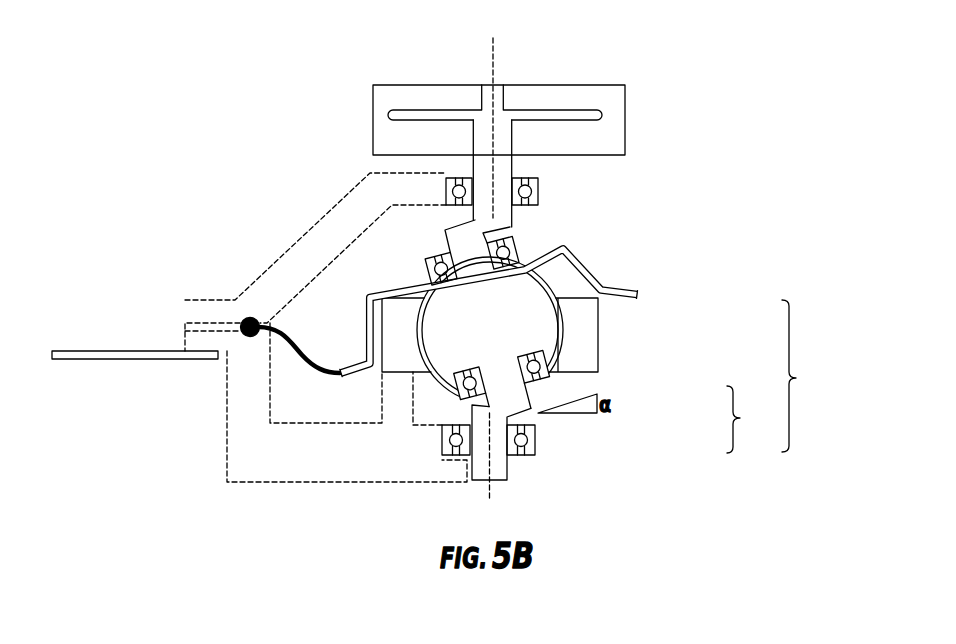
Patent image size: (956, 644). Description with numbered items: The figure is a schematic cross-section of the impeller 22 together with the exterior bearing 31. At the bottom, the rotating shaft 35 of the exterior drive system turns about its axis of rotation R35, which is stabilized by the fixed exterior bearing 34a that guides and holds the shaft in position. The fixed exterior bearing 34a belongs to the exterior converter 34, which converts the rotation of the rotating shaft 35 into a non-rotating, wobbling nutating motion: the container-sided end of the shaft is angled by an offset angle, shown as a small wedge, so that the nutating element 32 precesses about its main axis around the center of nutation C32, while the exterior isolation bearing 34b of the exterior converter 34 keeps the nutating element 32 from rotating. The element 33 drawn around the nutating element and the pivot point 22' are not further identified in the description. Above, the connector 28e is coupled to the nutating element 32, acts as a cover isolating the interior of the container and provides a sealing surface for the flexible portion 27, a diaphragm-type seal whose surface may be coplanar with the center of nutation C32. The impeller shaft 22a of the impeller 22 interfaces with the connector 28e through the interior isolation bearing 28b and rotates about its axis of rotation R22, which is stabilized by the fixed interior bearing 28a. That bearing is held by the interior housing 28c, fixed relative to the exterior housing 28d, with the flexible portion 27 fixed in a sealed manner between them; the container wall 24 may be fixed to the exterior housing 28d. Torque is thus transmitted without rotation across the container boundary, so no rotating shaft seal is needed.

The impeller 22 is at (542, 120).
The pivot point 22' is at (171, 300).
The impeller shaft 22a is at (493, 165).
The container wall 24 is at (160, 361).
The flexible portion 27 is at (307, 365).
The fixed interior bearing 28a is at (533, 193).
The interior isolation bearing 28b is at (527, 240).
The interior housing 28c is at (265, 290).
The exterior housing 28d is at (240, 450).
The connector 28e is at (601, 283).
The exterior bearing 31 is at (802, 376).
The nutating element 32 is at (548, 335).
The gyro rotor housing 33 is at (585, 357).
The exterior converter 34 is at (746, 419).
The fixed exterior bearing 34a is at (535, 440).
The exterior isolation bearing 34b is at (548, 378).
The rotating shaft 35 is at (508, 472).
The axis of rotation R22 is at (493, 63).
The axis of rotation R35 is at (490, 485).
The center of nutation C32 is at (492, 328).